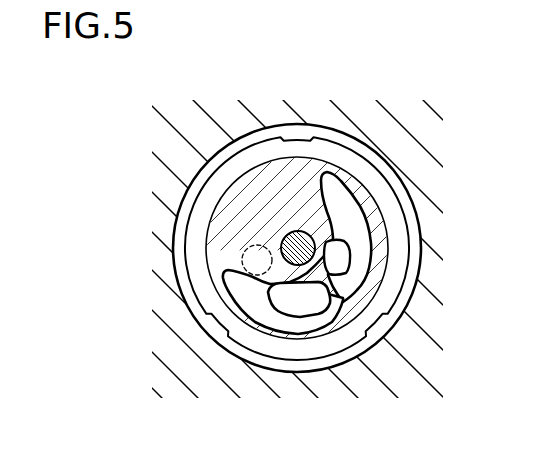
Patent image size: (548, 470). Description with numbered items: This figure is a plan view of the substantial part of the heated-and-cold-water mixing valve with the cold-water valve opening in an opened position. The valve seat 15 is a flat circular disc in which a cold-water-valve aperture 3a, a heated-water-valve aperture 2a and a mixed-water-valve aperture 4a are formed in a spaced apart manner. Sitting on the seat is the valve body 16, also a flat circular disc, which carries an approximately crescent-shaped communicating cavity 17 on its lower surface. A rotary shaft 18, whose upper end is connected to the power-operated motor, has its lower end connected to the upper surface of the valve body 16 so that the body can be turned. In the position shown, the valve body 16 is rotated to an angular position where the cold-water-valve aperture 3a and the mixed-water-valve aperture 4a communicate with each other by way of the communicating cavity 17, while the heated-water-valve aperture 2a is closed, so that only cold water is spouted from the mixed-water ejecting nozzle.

The valve seat 15 is at (342, 152).
The valve body 16 is at (387, 213).
The communicating cavity 17 is at (366, 240).
The cold-water-valve aperture 3a is at (344, 262).
The mixed-water-valve aperture 4a is at (293, 300).
The rotary shaft 18 is at (293, 229).
The heated-water-valve aperture 2a is at (255, 253).